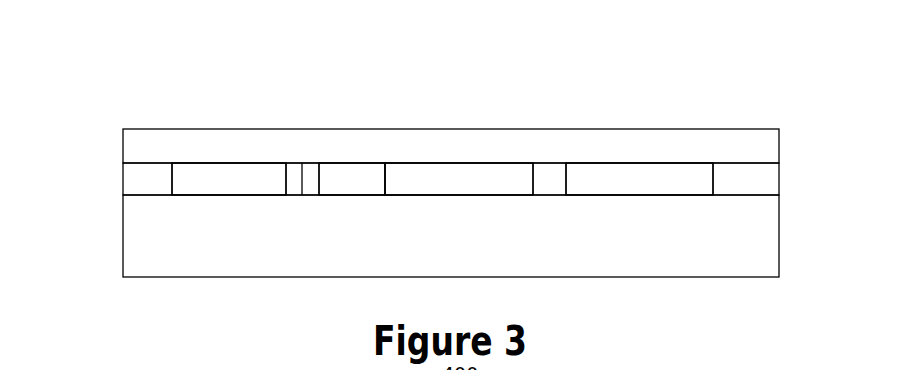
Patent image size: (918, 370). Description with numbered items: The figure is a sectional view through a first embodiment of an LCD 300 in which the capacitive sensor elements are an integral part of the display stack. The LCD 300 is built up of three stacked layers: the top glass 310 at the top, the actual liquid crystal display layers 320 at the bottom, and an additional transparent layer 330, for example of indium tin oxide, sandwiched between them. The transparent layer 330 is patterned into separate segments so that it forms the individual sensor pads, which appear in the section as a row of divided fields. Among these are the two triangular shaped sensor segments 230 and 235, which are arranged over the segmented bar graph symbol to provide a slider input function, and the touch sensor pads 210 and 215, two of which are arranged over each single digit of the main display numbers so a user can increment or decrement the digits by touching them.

The LCD 300 is at (467, 63).
The top glass 310 is at (156, 146).
The liquid crystal display layers 320 is at (775, 250).
The transparent layer 330 is at (122, 178).
The touch sensor pad 210 is at (458, 176).
The touch sensor pad 215 is at (680, 176).
The triangular shaped sensor segment 230 is at (341, 174).
The triangular shaped sensor segment 235 is at (237, 176).